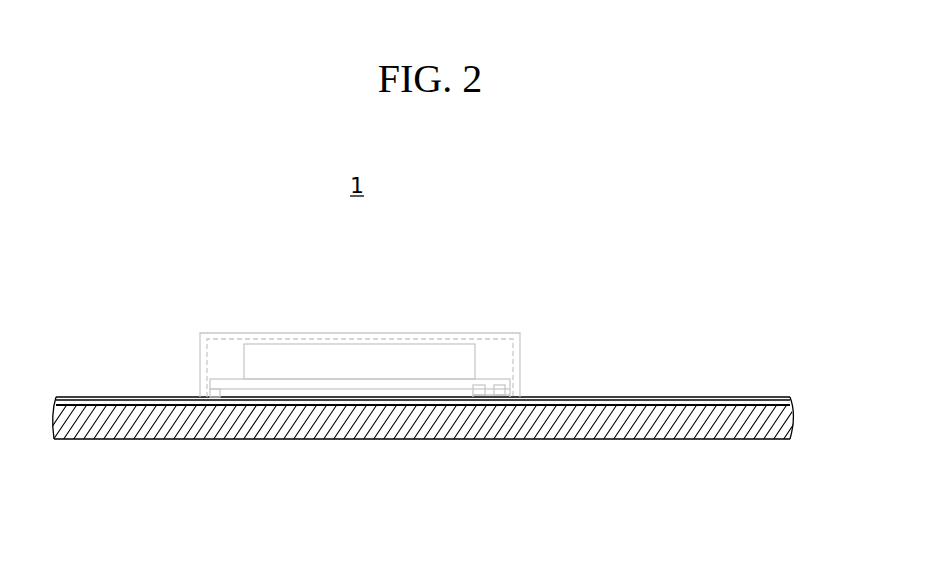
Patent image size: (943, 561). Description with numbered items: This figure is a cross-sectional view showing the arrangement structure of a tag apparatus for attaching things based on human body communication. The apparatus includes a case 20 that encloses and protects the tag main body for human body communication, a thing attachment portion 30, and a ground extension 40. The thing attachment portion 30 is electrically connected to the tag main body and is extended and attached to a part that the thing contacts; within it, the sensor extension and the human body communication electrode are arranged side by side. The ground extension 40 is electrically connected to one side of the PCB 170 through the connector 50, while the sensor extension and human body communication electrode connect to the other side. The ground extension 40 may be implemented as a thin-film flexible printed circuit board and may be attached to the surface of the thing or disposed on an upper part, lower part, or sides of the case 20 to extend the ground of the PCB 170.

The case 20 is at (226, 317).
The thing attachment portion 30 is at (598, 381).
The ground extension 40 is at (104, 390).
The connector 50 is at (505, 392).
The PCB 170 is at (263, 383).